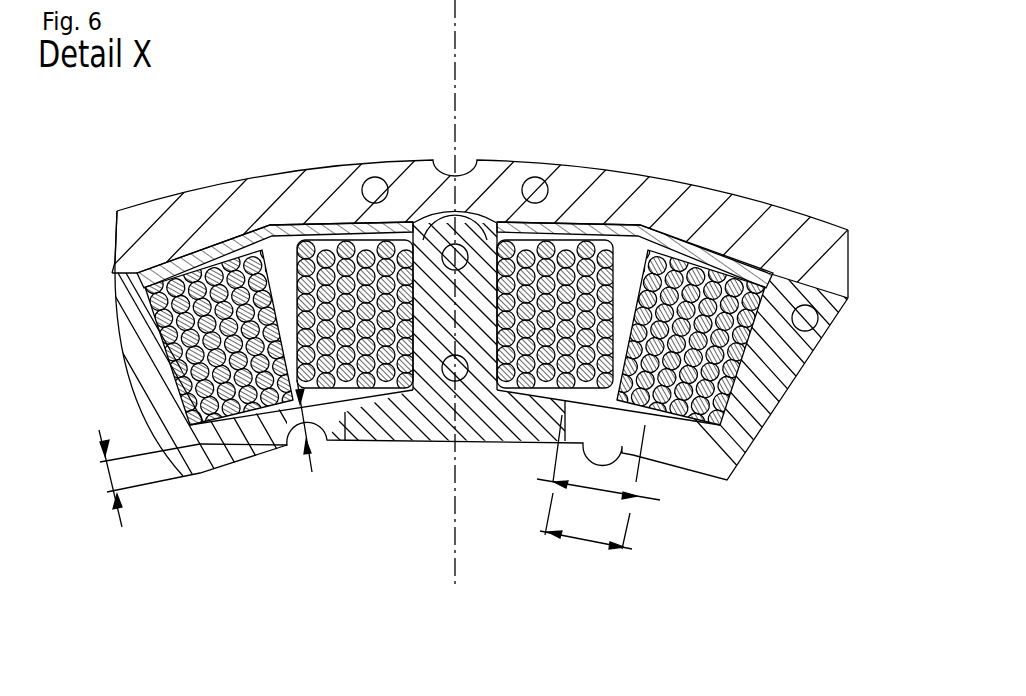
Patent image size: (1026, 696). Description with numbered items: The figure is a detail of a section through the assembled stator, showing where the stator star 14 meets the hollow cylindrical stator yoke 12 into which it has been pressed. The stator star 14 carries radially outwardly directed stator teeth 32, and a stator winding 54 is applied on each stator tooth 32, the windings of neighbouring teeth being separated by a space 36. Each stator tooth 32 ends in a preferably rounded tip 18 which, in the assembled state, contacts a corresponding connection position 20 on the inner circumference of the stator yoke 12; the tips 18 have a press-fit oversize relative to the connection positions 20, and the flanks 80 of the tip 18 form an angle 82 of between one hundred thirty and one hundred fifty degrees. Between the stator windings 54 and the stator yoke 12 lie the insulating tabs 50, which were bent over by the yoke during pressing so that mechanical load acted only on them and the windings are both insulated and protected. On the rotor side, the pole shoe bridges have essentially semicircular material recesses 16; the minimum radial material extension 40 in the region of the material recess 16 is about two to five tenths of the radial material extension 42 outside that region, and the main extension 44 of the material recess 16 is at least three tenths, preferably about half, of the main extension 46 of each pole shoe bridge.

The stator yoke 12 is at (677, 210).
The stator star 14 is at (143, 343).
The material recess 16 is at (637, 483).
The tip 18 is at (815, 300).
The connection position 20 is at (795, 297).
The stator tooth 32 is at (767, 382).
The space 36 is at (282, 307).
The minimum radial material extension 40 is at (310, 457).
The radial material extension 42 is at (110, 478).
The main extension 44 is at (647, 503).
The main extension 46 is at (580, 536).
The insulating tab 50 is at (238, 243).
The stator winding 54 is at (150, 275).
The flank 80 is at (472, 220).
The angle 82 is at (447, 213).